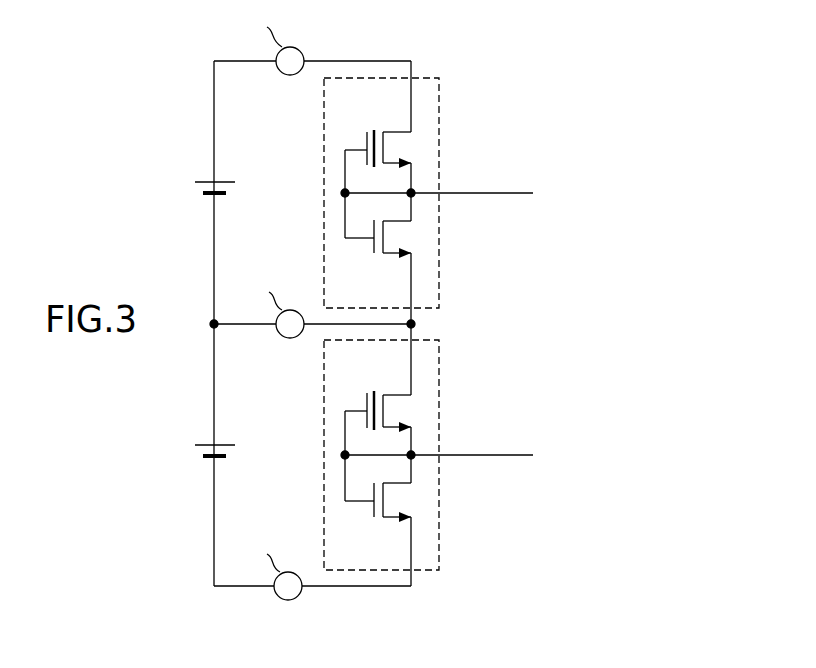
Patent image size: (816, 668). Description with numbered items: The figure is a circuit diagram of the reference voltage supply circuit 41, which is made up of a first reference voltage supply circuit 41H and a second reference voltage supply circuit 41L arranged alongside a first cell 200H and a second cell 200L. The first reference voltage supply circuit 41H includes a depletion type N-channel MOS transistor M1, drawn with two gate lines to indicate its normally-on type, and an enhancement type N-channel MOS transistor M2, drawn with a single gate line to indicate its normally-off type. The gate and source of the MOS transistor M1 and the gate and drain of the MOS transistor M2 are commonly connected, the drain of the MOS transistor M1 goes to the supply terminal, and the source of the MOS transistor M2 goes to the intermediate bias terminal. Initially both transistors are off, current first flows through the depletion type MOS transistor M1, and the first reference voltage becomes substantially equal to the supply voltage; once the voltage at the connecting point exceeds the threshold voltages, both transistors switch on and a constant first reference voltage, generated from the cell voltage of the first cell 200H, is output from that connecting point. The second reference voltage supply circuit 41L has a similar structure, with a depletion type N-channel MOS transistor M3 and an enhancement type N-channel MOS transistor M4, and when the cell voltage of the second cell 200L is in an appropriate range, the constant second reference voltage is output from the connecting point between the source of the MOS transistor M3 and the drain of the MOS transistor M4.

The reference voltage supply circuit 41 is at (165, 60).
The first cell 200H is at (222, 182).
The second cell 200L is at (222, 445).
The first reference voltage supply circuit 41H is at (441, 104).
The second reference voltage supply circuit 41L is at (441, 365).
The depletion type N-channel MOS transistor M1 is at (364, 136).
The enhancement type N-channel MOS transistor M2 is at (372, 255).
The depletion type N-channel MOS transistor M3 is at (364, 398).
The enhancement type N-channel MOS transistor M4 is at (374, 518).